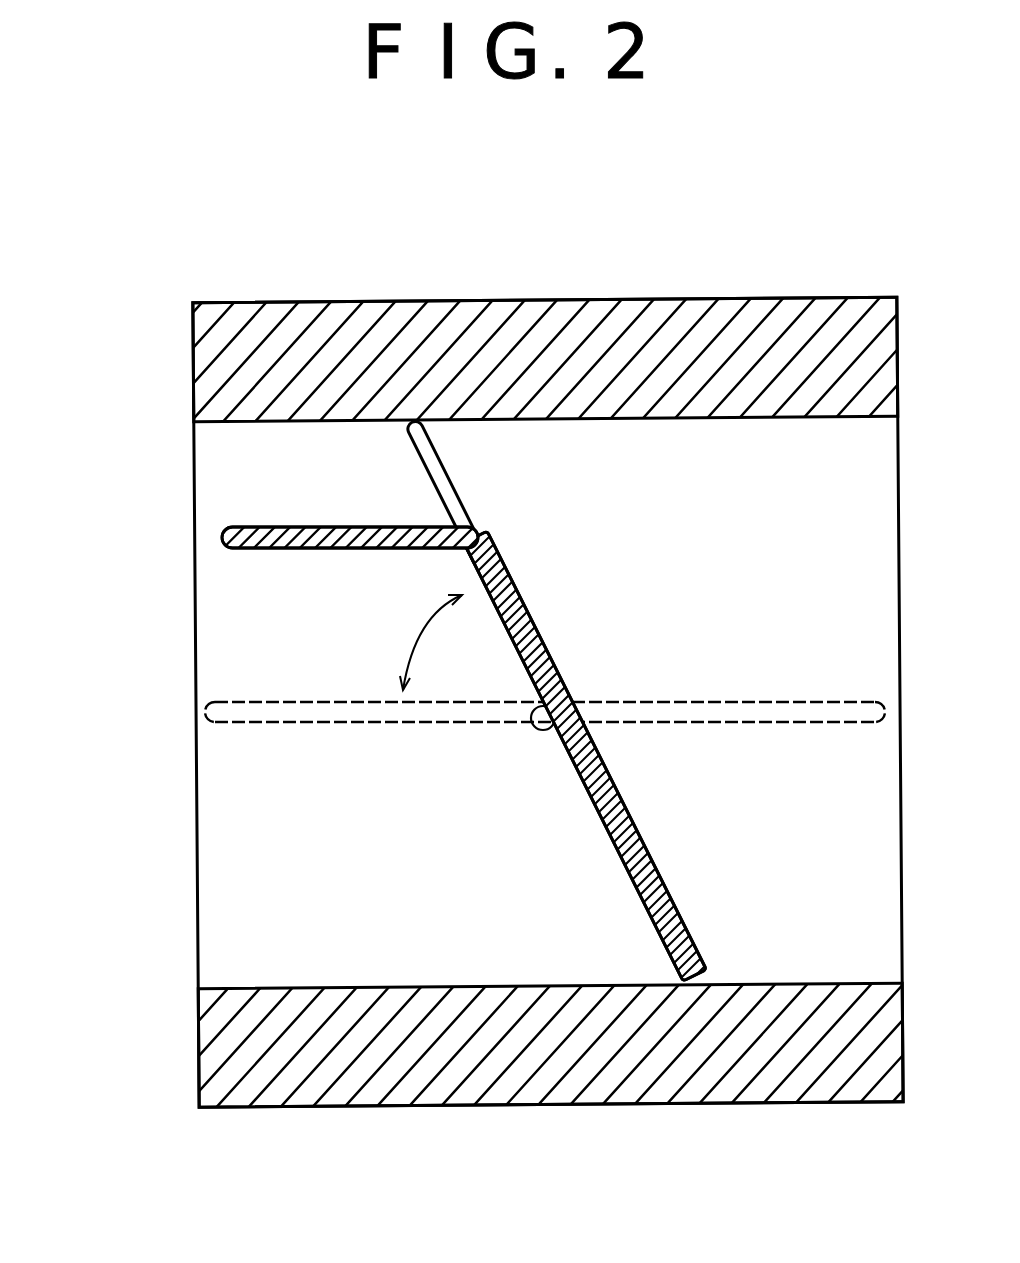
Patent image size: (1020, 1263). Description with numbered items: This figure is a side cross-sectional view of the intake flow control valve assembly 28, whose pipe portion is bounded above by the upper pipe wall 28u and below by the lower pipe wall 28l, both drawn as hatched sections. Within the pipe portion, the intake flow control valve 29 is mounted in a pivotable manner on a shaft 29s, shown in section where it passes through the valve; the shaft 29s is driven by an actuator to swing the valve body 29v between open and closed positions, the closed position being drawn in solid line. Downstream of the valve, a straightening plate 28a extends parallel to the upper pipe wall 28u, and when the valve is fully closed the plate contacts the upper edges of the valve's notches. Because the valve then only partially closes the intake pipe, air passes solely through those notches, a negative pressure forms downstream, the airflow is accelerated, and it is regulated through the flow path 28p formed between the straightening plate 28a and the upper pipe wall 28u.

The intake flow control valve assembly 28 is at (548, 638).
The flow path 28p is at (272, 480).
The straightening plate 28a is at (315, 545).
The upper pipe wall 28u is at (802, 418).
The lower wall 28l is at (794, 983).
The intake flow control valve 29 is at (492, 566).
The valve body 29v is at (538, 648).
The shaft 29s is at (541, 731).